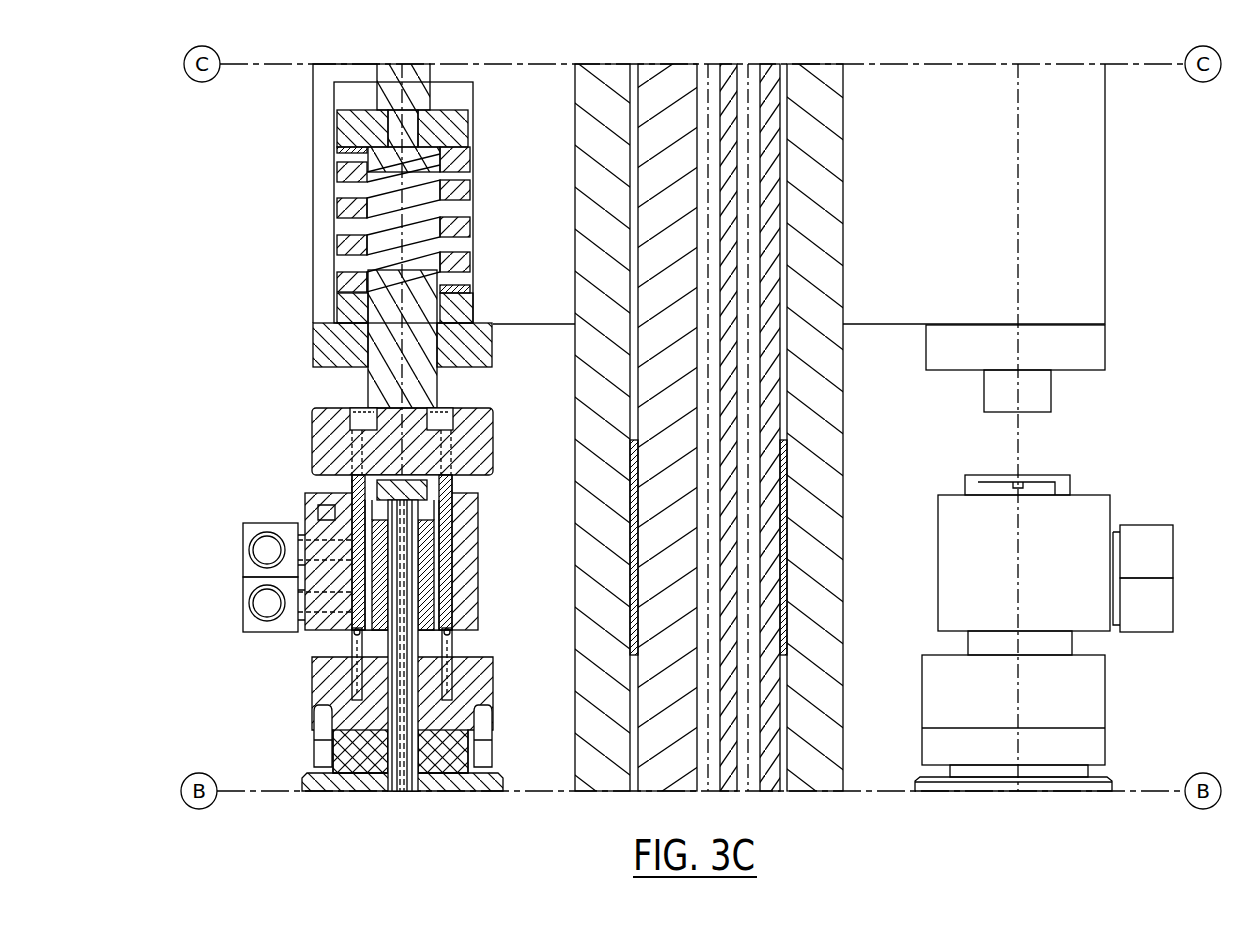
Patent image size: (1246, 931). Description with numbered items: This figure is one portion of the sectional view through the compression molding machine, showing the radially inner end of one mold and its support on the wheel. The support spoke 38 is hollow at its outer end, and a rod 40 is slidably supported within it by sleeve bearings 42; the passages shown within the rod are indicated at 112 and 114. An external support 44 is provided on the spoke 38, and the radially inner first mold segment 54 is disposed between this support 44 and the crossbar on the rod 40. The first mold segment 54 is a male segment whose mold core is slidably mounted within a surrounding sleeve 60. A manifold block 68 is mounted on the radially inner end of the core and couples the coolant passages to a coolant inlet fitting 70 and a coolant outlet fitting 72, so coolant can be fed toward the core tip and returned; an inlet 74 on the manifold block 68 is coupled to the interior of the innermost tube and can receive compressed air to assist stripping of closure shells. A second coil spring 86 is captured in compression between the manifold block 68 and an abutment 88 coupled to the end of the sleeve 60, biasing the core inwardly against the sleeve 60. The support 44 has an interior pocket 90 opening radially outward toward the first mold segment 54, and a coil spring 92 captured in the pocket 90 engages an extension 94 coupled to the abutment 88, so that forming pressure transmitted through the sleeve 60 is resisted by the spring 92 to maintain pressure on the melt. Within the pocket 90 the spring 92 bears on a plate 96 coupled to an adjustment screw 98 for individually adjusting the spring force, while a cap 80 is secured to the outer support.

The support spoke 38 is at (830, 122).
The rod 40 is at (768, 236).
The sleeve bearing 42 is at (780, 548).
The external support 44 is at (318, 218).
The first mold segment 54 is at (255, 685).
The sleeve 60 is at (370, 760).
The manifold block 68 is at (470, 518).
The coolant inlet fitting 70 is at (248, 548).
The coolant outlet fitting 72 is at (248, 603).
The inlet 74 is at (305, 510).
The cap 80 is at (490, 780).
The second coil spring 86 is at (450, 634).
The abutment 88 is at (480, 672).
The interior pocket 90 is at (340, 100).
The coil spring 92 is at (337, 248).
The extension 94 is at (370, 388).
The plate 96 is at (338, 128).
The adjustment screw 98 is at (410, 74).
The inner bore 112 is at (755, 412).
The central bore 114 is at (713, 360).